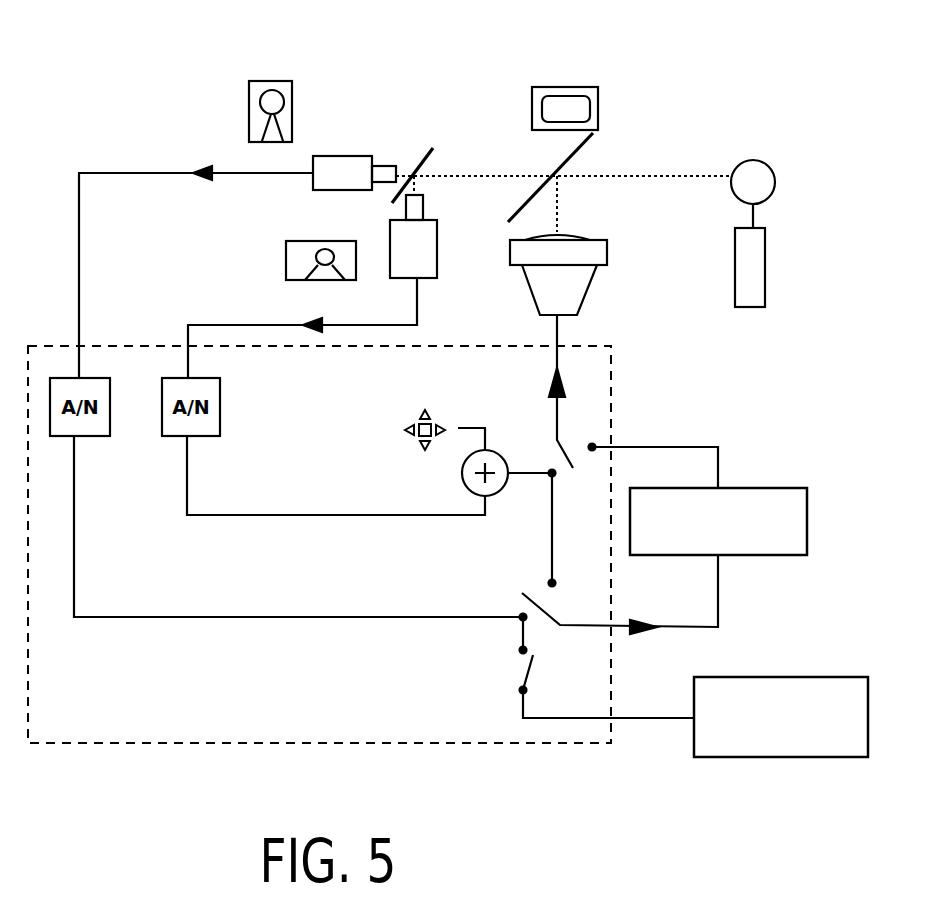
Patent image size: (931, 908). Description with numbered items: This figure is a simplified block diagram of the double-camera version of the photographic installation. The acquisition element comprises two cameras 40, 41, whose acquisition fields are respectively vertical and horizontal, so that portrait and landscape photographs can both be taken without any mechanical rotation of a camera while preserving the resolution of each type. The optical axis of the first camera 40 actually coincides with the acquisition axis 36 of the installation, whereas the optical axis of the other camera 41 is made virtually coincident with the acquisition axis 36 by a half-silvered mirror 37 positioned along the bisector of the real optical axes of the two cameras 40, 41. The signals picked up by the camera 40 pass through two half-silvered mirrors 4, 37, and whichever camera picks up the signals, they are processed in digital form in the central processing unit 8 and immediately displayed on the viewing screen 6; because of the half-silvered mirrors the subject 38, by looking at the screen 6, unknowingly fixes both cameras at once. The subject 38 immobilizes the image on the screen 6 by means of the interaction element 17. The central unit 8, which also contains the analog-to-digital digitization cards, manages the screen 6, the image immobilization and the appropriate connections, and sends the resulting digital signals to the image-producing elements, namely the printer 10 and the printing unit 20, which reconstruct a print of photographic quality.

The half-silvered mirror 4 is at (528, 198).
The viewing screen 6 is at (590, 87).
The central processing unit 8 is at (515, 748).
The printer 10 is at (808, 520).
The interaction element 17 is at (410, 415).
The printing unit 20 is at (783, 758).
The acquisition axis 36 is at (683, 175).
The half-silvered mirror 37 is at (430, 145).
The subject 38 is at (767, 250).
The camera 40 is at (350, 170).
The camera 41 is at (430, 250).